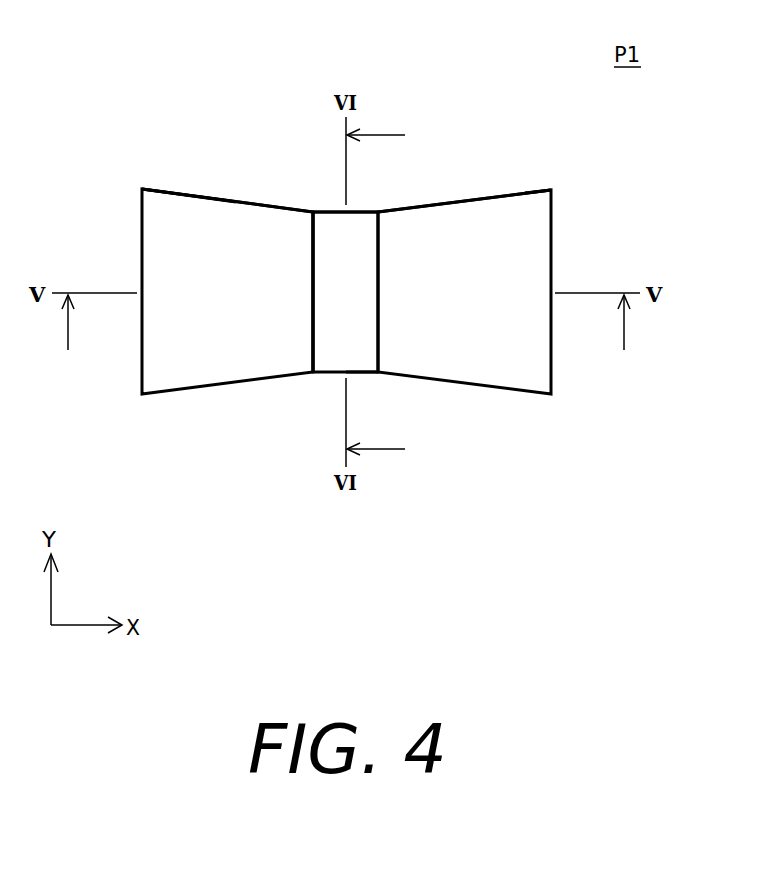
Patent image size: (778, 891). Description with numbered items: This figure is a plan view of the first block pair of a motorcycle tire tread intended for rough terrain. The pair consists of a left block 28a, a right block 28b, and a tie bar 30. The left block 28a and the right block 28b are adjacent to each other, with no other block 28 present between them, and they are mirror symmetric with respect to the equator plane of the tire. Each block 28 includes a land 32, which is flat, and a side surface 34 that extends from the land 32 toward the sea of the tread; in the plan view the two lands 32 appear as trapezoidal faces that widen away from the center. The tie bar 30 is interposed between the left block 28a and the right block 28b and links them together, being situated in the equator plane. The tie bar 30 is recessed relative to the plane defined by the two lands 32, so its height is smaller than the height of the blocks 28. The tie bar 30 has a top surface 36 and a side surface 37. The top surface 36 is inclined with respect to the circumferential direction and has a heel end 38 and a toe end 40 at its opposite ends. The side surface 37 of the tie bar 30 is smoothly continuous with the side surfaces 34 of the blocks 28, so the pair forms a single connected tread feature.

The block 28 is at (344, 383).
The left block 28a is at (186, 398).
The right block 28b is at (503, 400).
The tie bar 30 is at (305, 321).
The land 32 is at (205, 250).
The side surface 34 is at (236, 202).
The top surface 36 is at (331, 343).
The side surface 37 is at (333, 207).
The heel end 38 is at (363, 207).
The toe end 40 is at (363, 377).